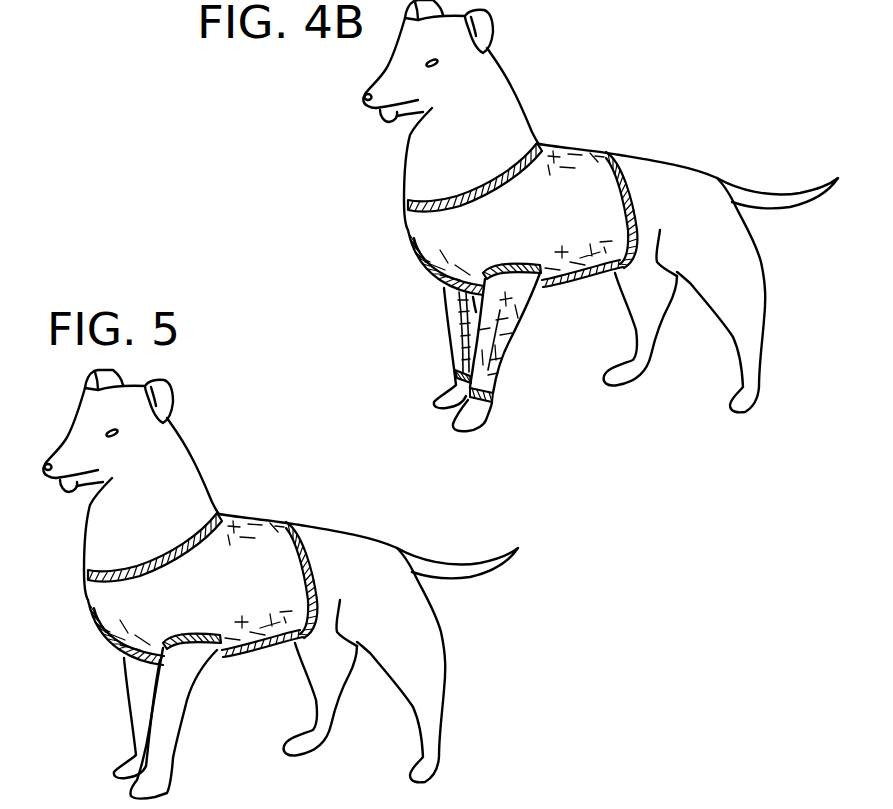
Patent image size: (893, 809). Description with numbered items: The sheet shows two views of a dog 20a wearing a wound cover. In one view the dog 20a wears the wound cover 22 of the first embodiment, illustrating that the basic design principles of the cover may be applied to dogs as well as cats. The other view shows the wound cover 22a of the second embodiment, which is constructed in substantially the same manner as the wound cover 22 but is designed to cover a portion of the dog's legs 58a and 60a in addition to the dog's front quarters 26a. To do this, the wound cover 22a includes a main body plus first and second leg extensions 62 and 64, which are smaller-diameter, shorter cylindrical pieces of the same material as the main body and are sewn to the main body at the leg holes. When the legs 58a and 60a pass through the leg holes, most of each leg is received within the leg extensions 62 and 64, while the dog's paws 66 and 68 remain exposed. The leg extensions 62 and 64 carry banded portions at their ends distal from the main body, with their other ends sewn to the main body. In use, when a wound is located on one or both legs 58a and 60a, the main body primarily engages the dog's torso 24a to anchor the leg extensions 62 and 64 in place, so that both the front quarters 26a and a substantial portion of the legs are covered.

In FIG. 4B, the dog 20a is at (533, 63).
In FIG. 5, the dog 20a is at (205, 445).
In FIG. 4B, the wound cover 22a is at (588, 133).
In FIG. 4B, the torso 24a is at (604, 141).
In FIG. 4B, the front quarters 26a is at (389, 224).
In FIG. 4B, the leg 58a is at (494, 399).
In FIG. 4B, the leg 60a is at (457, 380).
In FIG. 4B, the first leg extension 62 is at (457, 325).
In FIG. 4B, the second leg extension 64 is at (510, 328).
In FIG. 4B, the paw 66 is at (456, 405).
In FIG. 4B, the paw 68 is at (478, 421).
In FIG. 5, the wound cover 22 is at (268, 513).